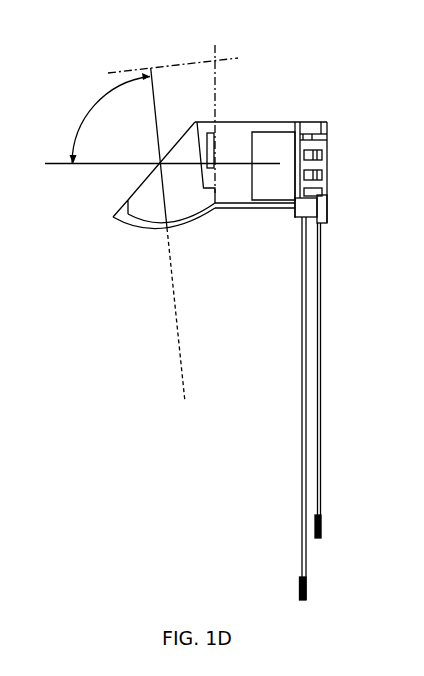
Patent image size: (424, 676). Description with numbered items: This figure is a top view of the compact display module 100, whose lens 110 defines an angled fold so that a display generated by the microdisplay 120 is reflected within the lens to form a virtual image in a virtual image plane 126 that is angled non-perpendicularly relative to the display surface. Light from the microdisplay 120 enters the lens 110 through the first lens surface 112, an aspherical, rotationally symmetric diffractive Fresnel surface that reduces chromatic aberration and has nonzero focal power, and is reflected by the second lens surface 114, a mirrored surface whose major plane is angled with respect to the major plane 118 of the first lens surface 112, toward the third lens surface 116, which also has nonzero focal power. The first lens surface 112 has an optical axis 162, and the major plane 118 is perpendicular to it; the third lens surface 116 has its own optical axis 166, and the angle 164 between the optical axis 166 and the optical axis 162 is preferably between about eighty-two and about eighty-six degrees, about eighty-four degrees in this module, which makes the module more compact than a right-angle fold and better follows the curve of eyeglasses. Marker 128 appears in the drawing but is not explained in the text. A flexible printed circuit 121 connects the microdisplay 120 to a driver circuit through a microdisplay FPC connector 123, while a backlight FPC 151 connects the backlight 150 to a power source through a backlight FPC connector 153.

The compact display module 100 is at (365, 70).
The lens 110 is at (190, 197).
The first lens surface 112 is at (217, 194).
The second lens surface 114 is at (127, 198).
The third lens surface 116 is at (152, 230).
The major plane of the first lens surface 118 is at (217, 106).
The microdisplay 120 is at (307, 191).
The flexible printed circuit 121 is at (302, 415).
The microdisplay FPC connector 123 is at (300, 589).
The virtual image plane 126 is at (156, 65).
The angle marker 128 is at (192, 66).
The backlight 150 is at (328, 131).
The backlight FPC 151 is at (321, 445).
The backlight FPC connector 153 is at (321, 528).
The optical axis of the first lens surface 162 is at (60, 164).
The angle 164 is at (100, 100).
The optical axis of the third lens surface 166 is at (177, 296).